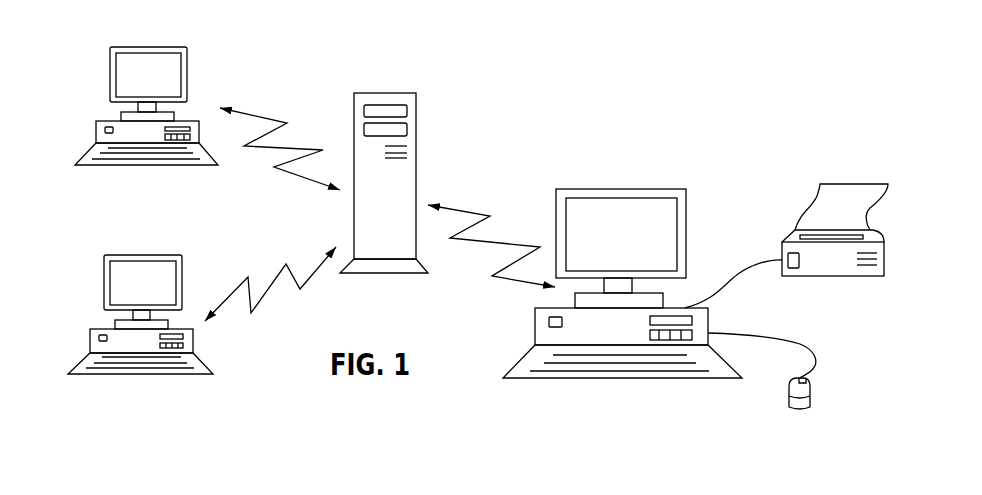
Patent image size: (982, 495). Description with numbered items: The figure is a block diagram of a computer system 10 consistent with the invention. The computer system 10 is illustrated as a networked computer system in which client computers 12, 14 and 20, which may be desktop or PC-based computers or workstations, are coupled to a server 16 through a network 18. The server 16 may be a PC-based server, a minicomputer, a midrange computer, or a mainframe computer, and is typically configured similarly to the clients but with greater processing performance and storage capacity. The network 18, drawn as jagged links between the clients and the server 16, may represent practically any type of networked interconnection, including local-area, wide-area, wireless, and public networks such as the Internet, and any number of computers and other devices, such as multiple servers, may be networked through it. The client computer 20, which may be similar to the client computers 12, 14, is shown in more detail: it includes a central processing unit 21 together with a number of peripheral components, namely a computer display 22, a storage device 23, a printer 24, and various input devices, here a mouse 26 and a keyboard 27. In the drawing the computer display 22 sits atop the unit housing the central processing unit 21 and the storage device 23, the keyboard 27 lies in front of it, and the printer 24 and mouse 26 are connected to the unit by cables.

The computer system 10 is at (545, 100).
The client computer 12 is at (112, 65).
The client computer 14 is at (105, 260).
The server 16 is at (372, 94).
The network 18 is at (274, 167).
The client computer 20 is at (606, 280).
The central processing unit 21 is at (588, 334).
The computer display 22 is at (592, 191).
The storage device 23 is at (668, 338).
The printer 24 is at (793, 237).
The mouse 26 is at (808, 400).
The keyboard 27 is at (522, 378).